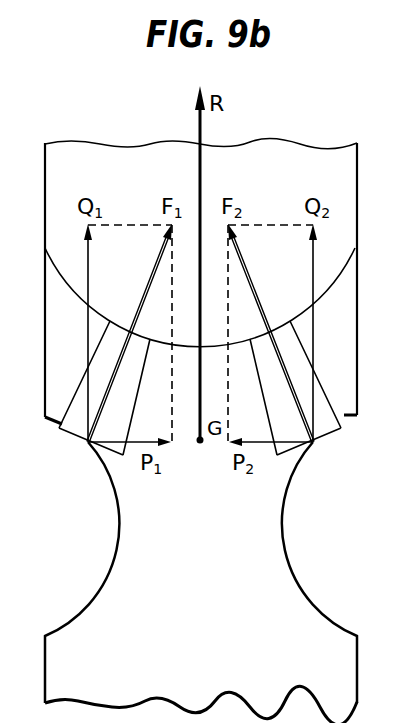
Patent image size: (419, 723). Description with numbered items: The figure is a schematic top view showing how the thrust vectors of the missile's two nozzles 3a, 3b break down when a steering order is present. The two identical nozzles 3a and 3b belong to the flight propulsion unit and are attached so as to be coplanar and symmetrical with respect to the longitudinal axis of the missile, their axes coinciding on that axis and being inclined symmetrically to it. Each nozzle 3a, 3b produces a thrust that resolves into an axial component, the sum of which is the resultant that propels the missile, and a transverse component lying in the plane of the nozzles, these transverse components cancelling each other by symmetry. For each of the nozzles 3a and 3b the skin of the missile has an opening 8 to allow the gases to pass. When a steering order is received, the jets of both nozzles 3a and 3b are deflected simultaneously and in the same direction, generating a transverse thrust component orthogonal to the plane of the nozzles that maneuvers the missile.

The nozzle 3a is at (330, 430).
The nozzle 3b is at (73, 433).
The opening 8 is at (288, 557).